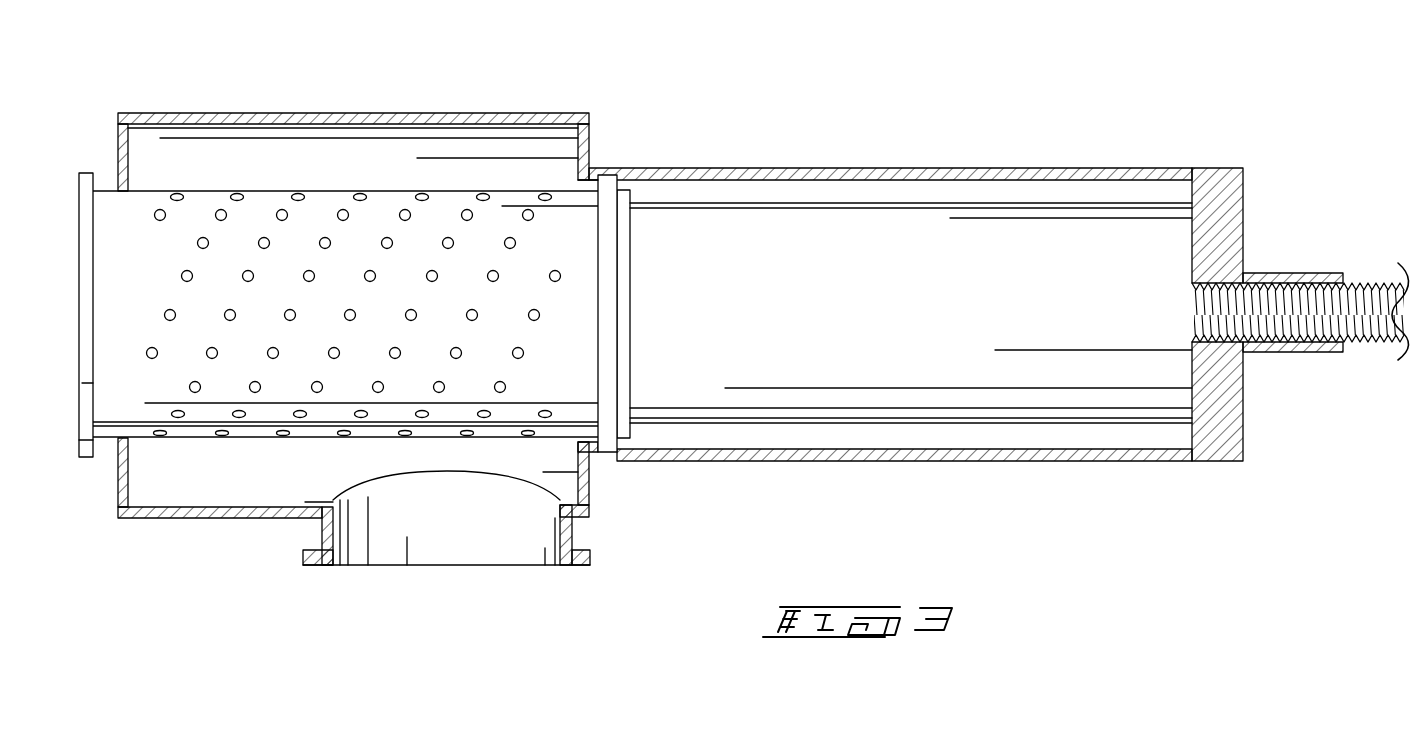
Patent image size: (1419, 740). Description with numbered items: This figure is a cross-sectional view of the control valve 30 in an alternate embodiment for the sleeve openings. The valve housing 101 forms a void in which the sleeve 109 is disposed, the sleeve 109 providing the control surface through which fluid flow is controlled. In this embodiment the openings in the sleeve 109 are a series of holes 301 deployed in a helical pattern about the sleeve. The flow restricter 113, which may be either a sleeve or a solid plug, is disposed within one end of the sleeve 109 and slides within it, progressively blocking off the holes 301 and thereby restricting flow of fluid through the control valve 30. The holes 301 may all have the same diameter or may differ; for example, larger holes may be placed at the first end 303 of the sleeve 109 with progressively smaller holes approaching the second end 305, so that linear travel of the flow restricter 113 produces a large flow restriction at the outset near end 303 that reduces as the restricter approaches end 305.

The control valve 30 is at (667, 82).
The valve housing 101 is at (229, 520).
The sleeve 109 is at (262, 190).
The flow restricter 113 is at (792, 203).
The holes 301 is at (307, 421).
The first end of sleeve 303 is at (630, 257).
The second end of sleeve 305 is at (78, 206).